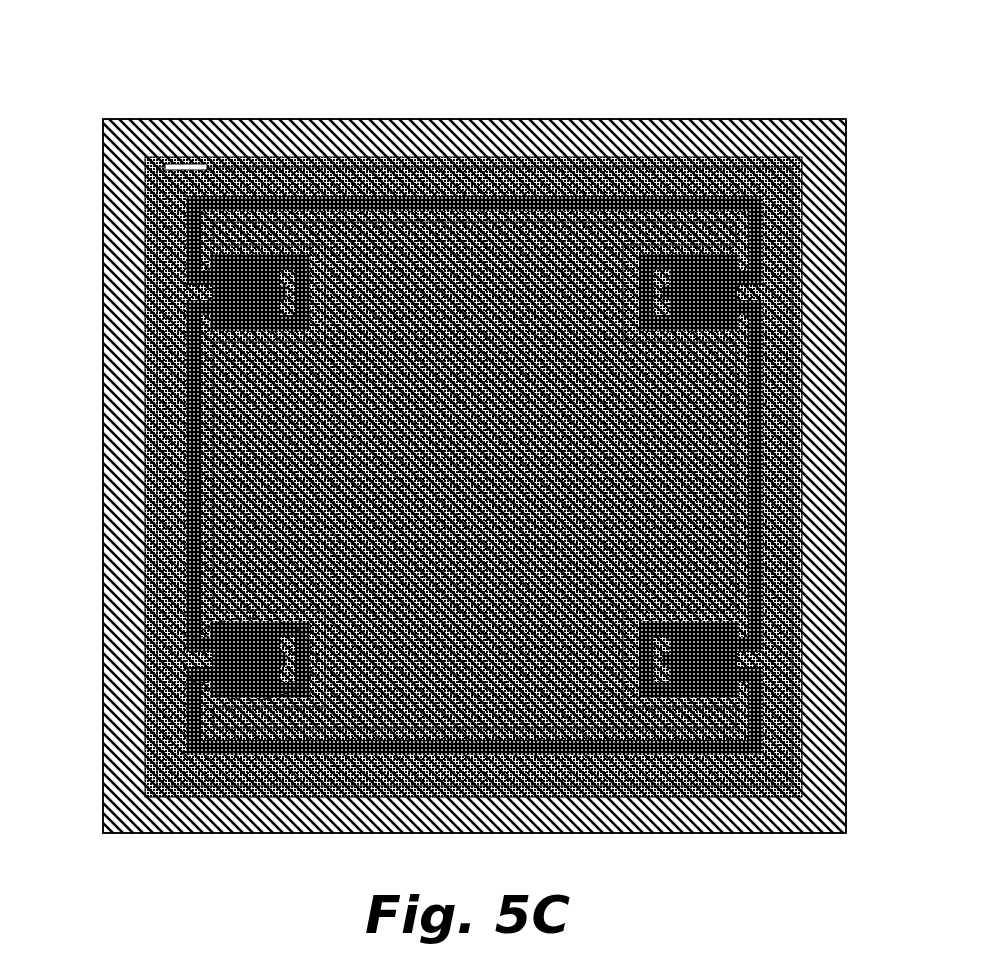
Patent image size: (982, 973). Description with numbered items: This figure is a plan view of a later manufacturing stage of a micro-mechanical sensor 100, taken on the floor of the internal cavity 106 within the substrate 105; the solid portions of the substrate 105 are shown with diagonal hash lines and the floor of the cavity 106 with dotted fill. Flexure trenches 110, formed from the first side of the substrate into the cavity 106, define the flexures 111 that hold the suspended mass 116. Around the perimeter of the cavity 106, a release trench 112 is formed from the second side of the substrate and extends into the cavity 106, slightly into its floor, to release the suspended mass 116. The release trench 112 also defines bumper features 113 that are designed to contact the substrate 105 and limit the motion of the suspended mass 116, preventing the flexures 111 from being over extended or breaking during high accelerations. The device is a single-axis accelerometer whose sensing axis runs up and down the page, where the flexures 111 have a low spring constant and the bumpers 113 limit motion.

The sensor device 100 is at (800, 68).
The substrate 105 is at (415, 121).
The internal cavity 106 is at (461, 192).
The flexure trenches 110 is at (186, 721).
The flexures 111 is at (183, 655).
The release trench 112 is at (272, 160).
The bumper features 113 is at (173, 165).
The suspended mass 116 is at (492, 457).